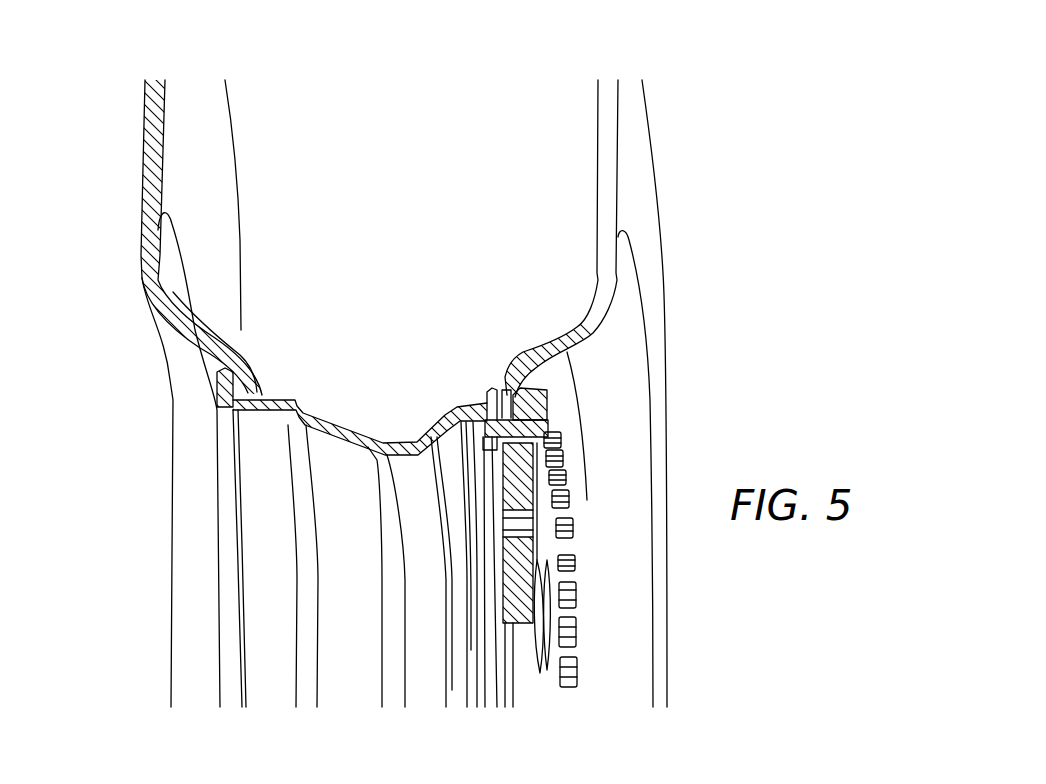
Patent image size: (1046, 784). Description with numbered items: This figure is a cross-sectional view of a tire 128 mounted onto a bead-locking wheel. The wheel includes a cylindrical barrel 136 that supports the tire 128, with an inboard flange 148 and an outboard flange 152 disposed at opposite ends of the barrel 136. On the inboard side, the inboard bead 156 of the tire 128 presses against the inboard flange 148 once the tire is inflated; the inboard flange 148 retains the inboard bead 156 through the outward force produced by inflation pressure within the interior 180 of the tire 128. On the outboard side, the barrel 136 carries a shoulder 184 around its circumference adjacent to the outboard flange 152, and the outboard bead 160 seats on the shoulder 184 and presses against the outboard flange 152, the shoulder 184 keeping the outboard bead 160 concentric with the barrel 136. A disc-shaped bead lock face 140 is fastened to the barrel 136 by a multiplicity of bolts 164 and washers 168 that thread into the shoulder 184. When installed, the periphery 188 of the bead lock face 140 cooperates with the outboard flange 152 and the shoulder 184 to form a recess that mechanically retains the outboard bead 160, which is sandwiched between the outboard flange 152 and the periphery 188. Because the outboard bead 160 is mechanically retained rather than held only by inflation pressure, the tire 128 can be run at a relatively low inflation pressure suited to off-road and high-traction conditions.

The tire 128 is at (143, 163).
The barrel 136 is at (273, 551).
The bead lock face 140 is at (512, 605).
The inboard flange 148 is at (221, 383).
The outboard flange 152 is at (493, 393).
The inboard bead 156 is at (250, 388).
The outboard bead 160 is at (508, 397).
The bolts 164 is at (575, 594).
The washers 168 is at (604, 683).
The interior 180 is at (418, 140).
The shoulder 184 is at (530, 408).
The periphery 188 is at (520, 394).